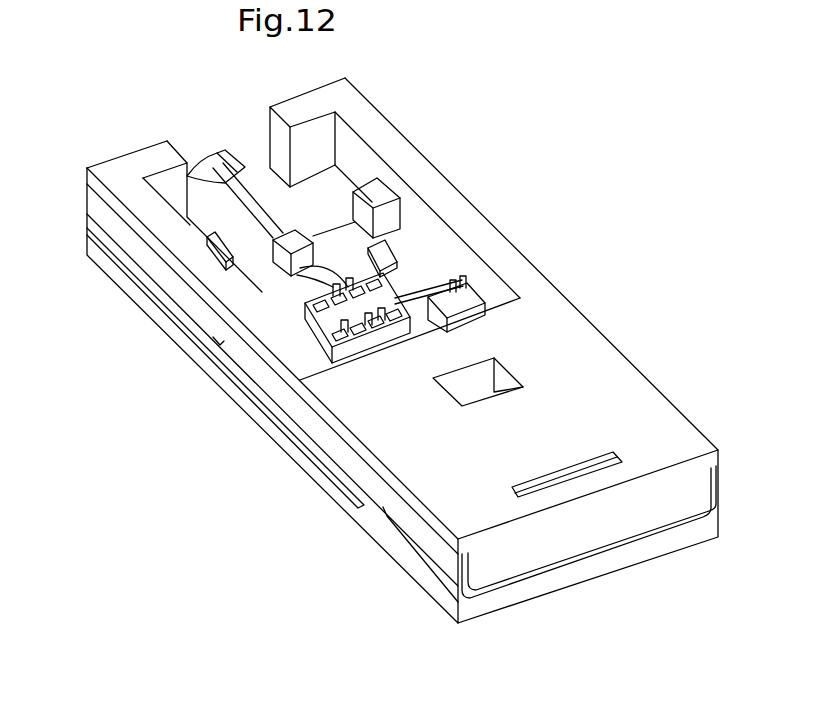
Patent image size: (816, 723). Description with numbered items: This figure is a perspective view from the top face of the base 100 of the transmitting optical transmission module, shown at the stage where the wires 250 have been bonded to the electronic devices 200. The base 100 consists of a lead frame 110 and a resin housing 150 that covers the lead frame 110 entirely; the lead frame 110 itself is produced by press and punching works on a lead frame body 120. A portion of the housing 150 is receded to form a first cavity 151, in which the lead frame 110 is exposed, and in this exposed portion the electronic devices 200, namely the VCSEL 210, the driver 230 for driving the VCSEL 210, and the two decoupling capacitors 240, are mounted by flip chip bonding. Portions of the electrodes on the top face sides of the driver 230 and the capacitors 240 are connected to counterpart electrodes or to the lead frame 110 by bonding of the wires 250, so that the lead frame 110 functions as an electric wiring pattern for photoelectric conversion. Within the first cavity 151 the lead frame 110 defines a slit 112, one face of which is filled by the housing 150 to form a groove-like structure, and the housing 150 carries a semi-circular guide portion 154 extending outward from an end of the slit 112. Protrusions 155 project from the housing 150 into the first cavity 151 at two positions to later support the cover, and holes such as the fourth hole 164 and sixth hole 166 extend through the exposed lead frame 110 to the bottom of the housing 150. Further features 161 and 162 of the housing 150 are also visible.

The base 100 is at (402, 378).
The lead frame 110 is at (690, 634).
The housing 150 is at (598, 567).
The lead frame body 120 is at (218, 218).
The first cavity 151 is at (357, 163).
The guide portion 154 is at (217, 153).
The protrusions 155 is at (382, 197).
The slit 112 is at (258, 213).
The opening 161 is at (480, 380).
The slot 162 is at (616, 458).
The fourth hole 164 is at (420, 285).
The sixth hole 166 is at (391, 272).
The electronic devices 200 is at (361, 351).
The surface emitting laser (VCSEL) 210 is at (281, 258).
The driver 230 is at (385, 333).
The decoupling capacitors 240 is at (325, 335).
The wires 250 is at (217, 343).